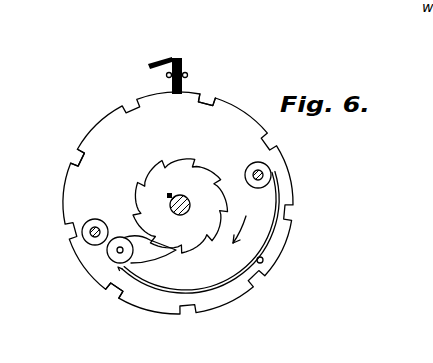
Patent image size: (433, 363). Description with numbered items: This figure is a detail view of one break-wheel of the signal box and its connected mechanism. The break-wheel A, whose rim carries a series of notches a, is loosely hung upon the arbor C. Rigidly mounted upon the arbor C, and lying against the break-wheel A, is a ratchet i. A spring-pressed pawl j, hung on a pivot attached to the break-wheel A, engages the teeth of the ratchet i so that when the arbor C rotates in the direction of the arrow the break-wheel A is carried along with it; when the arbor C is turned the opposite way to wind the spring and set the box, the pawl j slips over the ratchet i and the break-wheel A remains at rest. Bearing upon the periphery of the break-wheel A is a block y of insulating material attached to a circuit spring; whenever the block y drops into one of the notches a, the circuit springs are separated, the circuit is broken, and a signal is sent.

The break-wheel A is at (178, 203).
The notches a is at (209, 101).
The block of insulating material y is at (168, 83).
The ratchet i is at (180, 206).
The arbor C is at (186, 197).
The spring-pressed pawl j is at (141, 249).